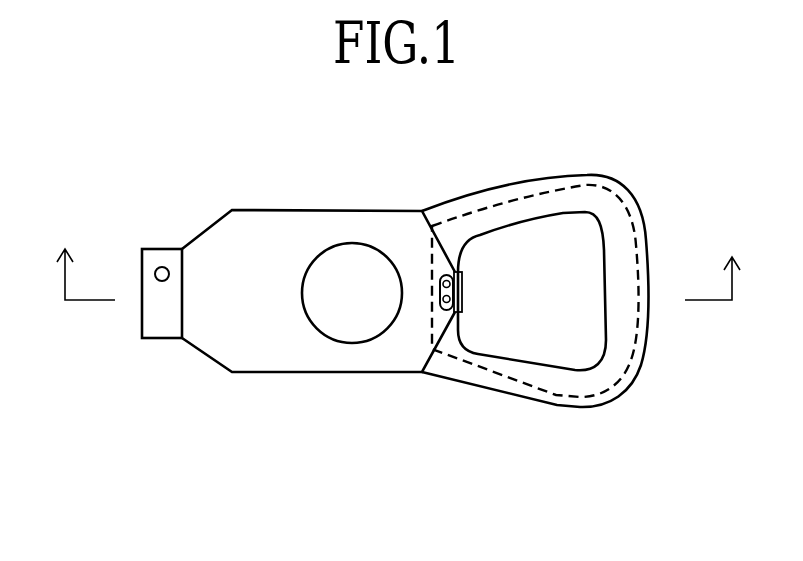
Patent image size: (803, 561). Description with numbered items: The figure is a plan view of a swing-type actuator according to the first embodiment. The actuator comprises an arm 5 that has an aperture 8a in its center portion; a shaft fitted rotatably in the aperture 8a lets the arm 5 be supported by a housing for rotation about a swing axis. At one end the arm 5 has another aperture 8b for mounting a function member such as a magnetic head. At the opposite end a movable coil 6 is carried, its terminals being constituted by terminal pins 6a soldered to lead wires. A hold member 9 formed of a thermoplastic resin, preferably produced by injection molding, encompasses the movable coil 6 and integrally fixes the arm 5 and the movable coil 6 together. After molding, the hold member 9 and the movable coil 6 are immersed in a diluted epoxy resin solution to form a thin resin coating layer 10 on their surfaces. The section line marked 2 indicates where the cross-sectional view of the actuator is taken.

The section line II-II 2 is at (399, 261).
The arm 5 is at (238, 343).
The movable coil 6 is at (582, 338).
The terminal pins 6a is at (462, 291).
The aperture 8a is at (343, 335).
The aperture 8b is at (162, 267).
The hold member 9 is at (548, 408).
The resin coating layer 10 is at (608, 370).